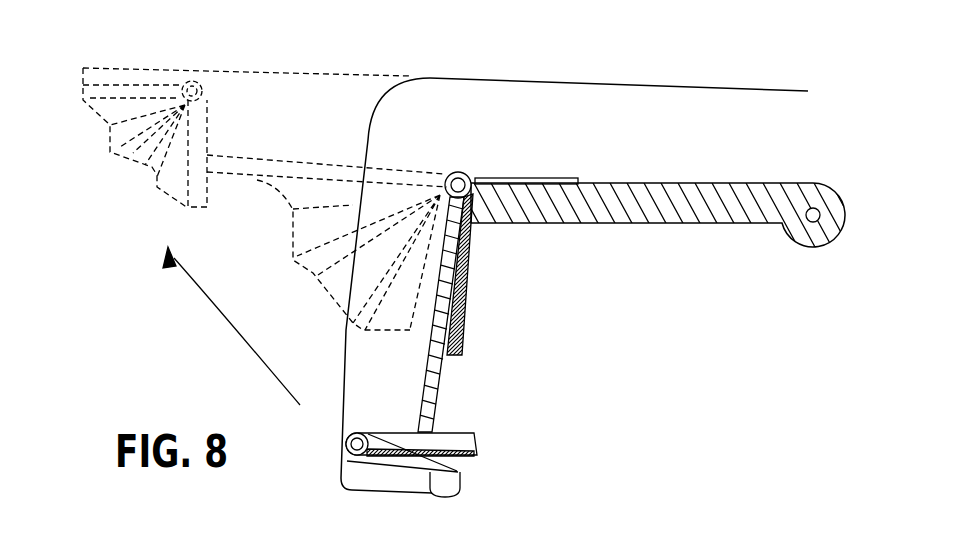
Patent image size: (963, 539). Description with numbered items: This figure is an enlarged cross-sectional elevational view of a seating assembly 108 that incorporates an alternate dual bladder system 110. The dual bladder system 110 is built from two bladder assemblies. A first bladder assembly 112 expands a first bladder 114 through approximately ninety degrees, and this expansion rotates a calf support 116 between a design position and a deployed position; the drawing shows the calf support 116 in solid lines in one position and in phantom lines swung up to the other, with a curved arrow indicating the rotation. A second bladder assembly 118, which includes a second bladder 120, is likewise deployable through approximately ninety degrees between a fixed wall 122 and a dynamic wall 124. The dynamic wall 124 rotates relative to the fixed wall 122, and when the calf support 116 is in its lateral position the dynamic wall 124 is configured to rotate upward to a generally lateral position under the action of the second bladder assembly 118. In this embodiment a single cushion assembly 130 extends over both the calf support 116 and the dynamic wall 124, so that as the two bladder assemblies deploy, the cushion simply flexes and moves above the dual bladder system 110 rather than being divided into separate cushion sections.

The seating assembly 108 is at (647, 67).
The dual bladder system 110 is at (542, 360).
The first bladder assembly 112 is at (470, 287).
The first bladder 114 is at (313, 273).
The calf support 116 is at (292, 158).
The second bladder assembly 118 is at (477, 442).
The second bladder 120 is at (470, 458).
The fixed wall 122 is at (207, 123).
The dynamic wall 124 is at (120, 68).
The cushion assembly 130 is at (437, 92).